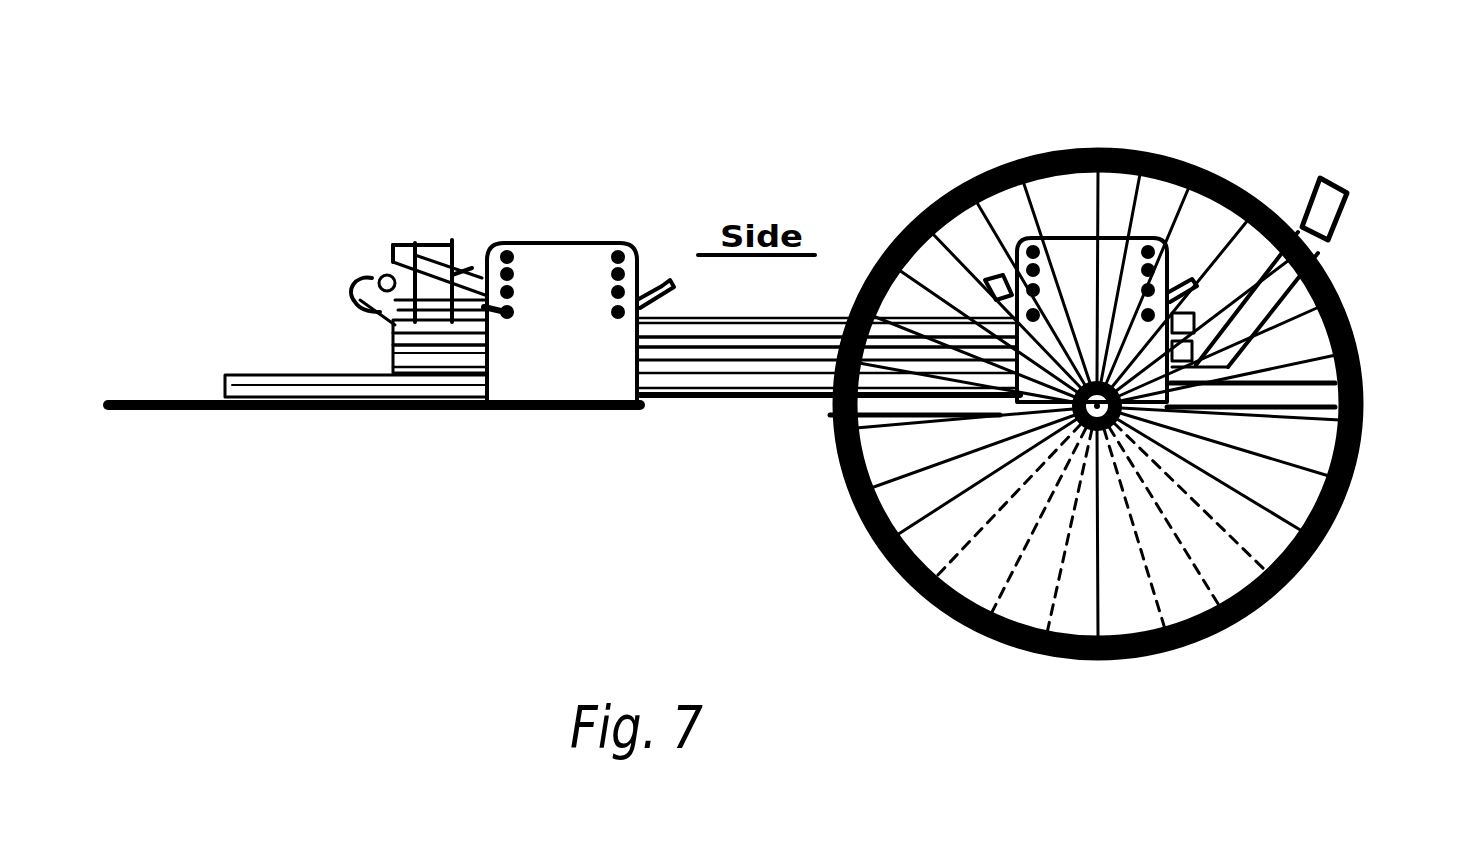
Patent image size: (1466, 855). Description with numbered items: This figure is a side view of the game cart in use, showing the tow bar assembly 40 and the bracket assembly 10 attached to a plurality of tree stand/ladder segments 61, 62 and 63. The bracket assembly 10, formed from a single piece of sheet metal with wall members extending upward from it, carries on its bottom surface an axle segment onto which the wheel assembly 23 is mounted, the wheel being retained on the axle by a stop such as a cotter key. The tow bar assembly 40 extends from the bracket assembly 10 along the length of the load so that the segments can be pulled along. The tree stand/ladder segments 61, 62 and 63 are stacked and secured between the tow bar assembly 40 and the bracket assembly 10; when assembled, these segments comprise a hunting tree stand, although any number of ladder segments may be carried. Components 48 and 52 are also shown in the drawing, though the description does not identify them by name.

The bracket assembly 10 is at (1117, 228).
The wheel assembly 23 is at (1357, 482).
The tow bar assembly 40 is at (152, 420).
The housing 48 is at (557, 388).
The latch bracket 52 is at (455, 246).
The tree stand/ladder segment 61 is at (390, 323).
The tree stand/ladder segment 62 is at (392, 353).
The tree stand/ladder segment 63 is at (225, 387).